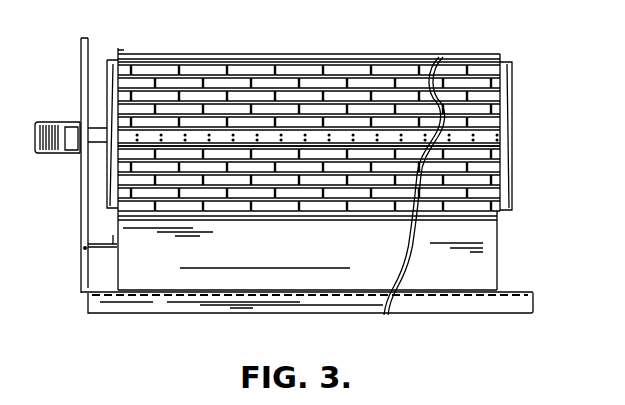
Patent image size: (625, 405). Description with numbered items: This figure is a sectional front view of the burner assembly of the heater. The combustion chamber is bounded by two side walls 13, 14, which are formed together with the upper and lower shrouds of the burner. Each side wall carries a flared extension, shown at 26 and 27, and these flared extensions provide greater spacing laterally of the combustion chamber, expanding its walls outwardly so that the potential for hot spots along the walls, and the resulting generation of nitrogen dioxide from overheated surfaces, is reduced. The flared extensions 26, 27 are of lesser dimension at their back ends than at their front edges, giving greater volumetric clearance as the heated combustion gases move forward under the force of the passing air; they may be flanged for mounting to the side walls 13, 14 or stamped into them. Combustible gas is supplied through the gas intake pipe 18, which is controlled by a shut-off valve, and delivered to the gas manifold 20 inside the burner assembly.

The side wall 13 is at (122, 48).
The flared extension 26 is at (107, 60).
The flared extension 27 is at (513, 62).
The gas manifold 20 is at (487, 138).
The side wall 14 is at (500, 57).
The gas intake pipe 18 is at (53, 155).